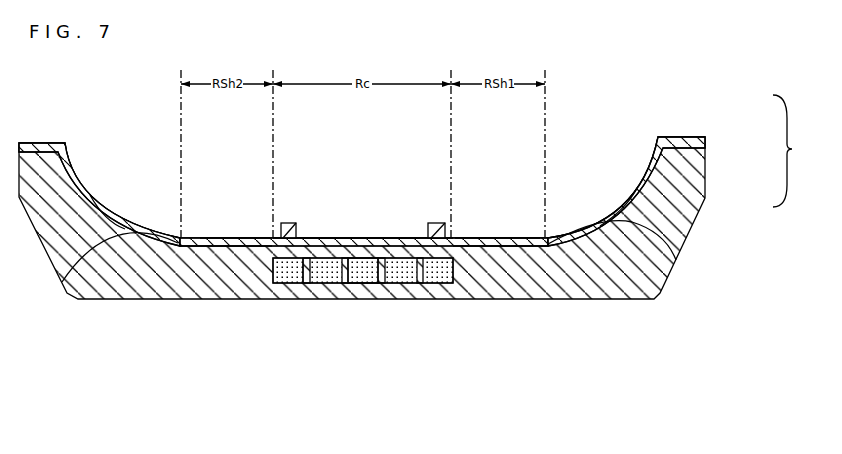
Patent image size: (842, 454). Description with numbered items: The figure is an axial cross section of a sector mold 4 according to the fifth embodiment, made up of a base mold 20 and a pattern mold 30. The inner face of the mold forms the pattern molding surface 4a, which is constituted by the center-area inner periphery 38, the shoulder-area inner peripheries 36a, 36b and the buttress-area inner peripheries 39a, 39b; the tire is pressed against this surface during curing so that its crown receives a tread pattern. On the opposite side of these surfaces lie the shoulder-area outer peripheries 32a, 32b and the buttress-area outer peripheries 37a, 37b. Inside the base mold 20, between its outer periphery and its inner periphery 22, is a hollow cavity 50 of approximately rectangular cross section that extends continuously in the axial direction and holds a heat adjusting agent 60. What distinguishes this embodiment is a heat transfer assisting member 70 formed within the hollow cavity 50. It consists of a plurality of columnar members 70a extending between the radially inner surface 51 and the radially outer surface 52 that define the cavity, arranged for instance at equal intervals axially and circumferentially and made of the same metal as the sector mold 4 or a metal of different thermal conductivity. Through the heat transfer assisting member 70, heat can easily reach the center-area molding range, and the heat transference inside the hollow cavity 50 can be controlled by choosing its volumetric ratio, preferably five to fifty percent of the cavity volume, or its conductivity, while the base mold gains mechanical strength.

The sector mold 4 is at (788, 151).
The pattern molding surface 4a is at (331, 145).
The base mold 20 is at (716, 184).
The coating layer 22 is at (413, 237).
The pattern mold 30 is at (715, 119).
The shoulder-area outer periphery 32a is at (497, 246).
The shoulder-area outer periphery 32b is at (238, 246).
The shoulder-area inner periphery 36a is at (506, 237).
The shoulder-area inner periphery 36b is at (236, 237).
The buttress-area outer periphery 37a is at (676, 260).
The buttress-area outer periphery 37b is at (62, 281).
The center-area inner periphery 38 is at (336, 237).
The buttress-area inner periphery 39a is at (627, 198).
The buttress-area inner periphery 39b is at (122, 217).
The hollow cavity 50 is at (450, 237).
The radially inner surface 51 is at (271, 266).
The radially outer surface 52 is at (303, 262).
The heat adjusting agent 60 is at (366, 270).
The heat transfer assisting member 70 is at (452, 323).
The columnar member 70a is at (309, 284).